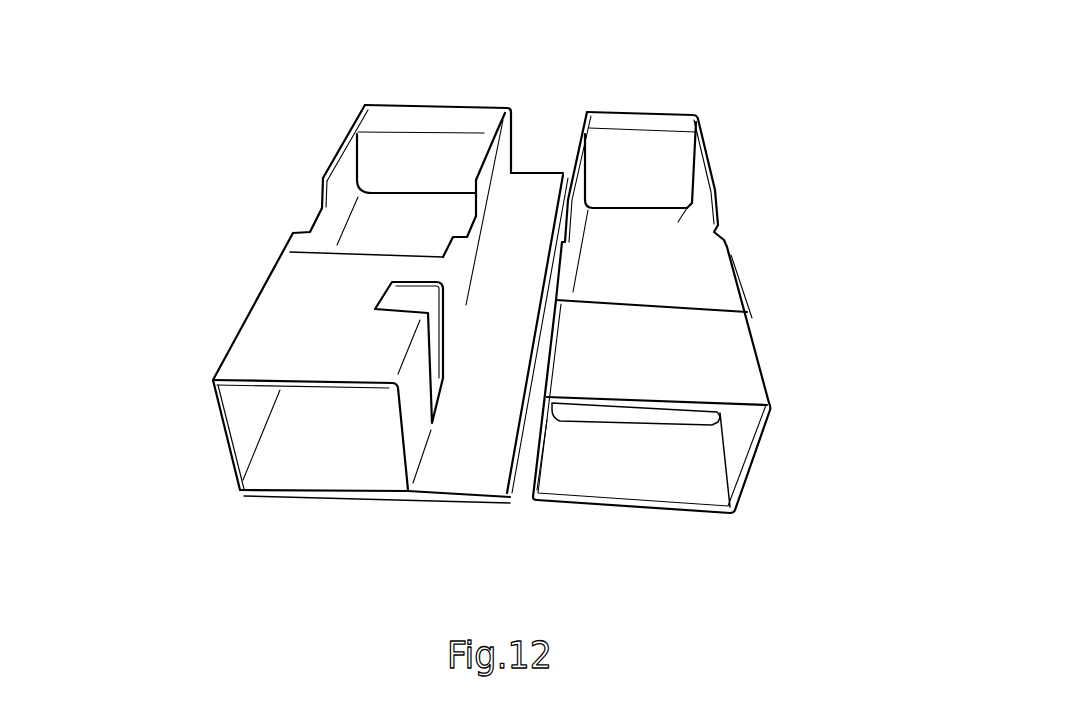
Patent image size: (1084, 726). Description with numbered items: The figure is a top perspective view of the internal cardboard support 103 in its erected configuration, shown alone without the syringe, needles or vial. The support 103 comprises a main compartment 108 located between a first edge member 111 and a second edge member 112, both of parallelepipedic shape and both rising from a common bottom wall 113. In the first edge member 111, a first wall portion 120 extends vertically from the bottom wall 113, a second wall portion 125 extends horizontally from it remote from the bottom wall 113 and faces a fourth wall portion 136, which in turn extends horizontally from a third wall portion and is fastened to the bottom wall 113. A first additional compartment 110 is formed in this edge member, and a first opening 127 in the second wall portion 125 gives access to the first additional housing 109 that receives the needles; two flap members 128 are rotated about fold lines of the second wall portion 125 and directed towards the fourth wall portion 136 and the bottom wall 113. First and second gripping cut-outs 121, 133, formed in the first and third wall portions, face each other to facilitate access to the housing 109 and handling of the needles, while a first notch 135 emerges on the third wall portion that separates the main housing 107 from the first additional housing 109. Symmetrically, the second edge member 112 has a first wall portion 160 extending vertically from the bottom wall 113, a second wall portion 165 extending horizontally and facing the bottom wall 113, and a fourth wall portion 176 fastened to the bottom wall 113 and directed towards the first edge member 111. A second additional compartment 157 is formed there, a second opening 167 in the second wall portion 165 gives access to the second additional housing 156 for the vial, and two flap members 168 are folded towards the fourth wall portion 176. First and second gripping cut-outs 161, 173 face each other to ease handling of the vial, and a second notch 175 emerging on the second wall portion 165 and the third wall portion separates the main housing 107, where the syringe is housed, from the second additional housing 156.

The internal cardboard support 103 is at (212, 108).
The main housing 107 is at (515, 217).
The main compartment 108 is at (544, 172).
The first additional housing 109 is at (672, 289).
The first additional compartment 110 is at (675, 225).
The first edge member 111 is at (790, 300).
The second edge member 112 is at (190, 366).
The bottom wall 113 is at (348, 456).
The first wall portion 120 is at (745, 468).
The first gripping cut-out 121 is at (717, 230).
The second wall portion 125 is at (635, 120).
The first opening 127 is at (632, 285).
The flap members 128 is at (673, 168).
The second gripping cut-out 133 is at (573, 225).
The first notch 135 is at (535, 298).
The fourth wall portion 136 is at (643, 478).
The second additional housing 156 is at (398, 217).
The second additional compartment 157 is at (297, 245).
The first wall portion 160 is at (245, 420).
The first gripping cut-out 161 is at (318, 208).
The second wall portion 165 is at (268, 328).
The second opening 167 is at (368, 233).
The flap members 168 is at (417, 160).
The second gripping cut-out 173 is at (480, 225).
The second notch 175 is at (410, 297).
The fourth wall portion 176 is at (473, 462).